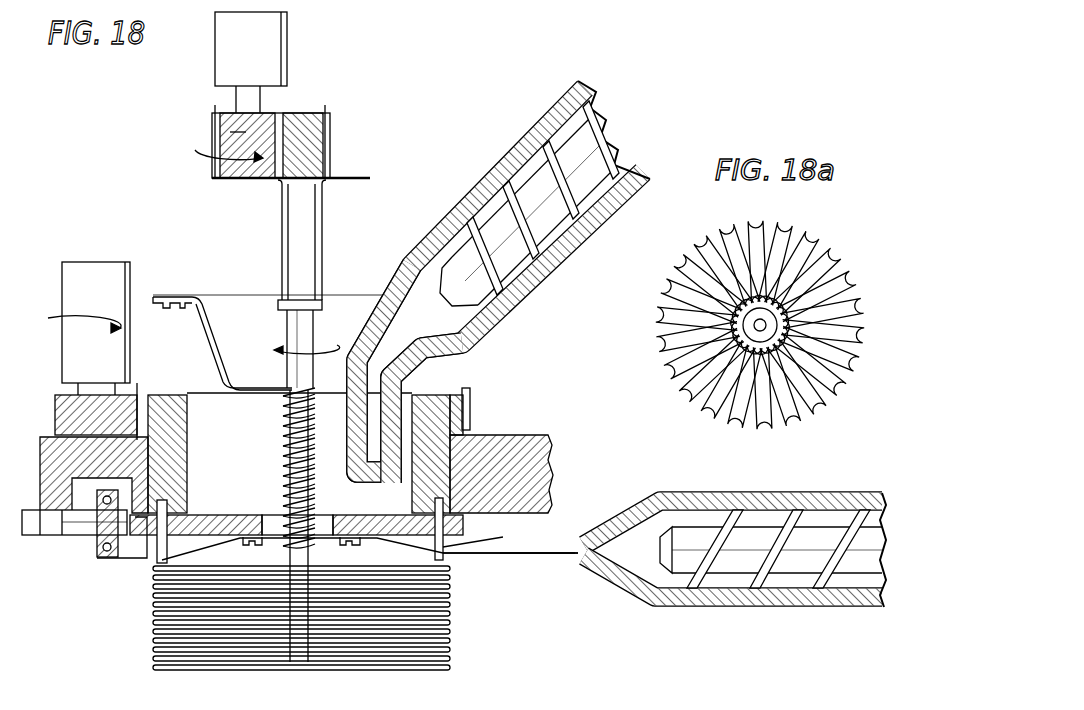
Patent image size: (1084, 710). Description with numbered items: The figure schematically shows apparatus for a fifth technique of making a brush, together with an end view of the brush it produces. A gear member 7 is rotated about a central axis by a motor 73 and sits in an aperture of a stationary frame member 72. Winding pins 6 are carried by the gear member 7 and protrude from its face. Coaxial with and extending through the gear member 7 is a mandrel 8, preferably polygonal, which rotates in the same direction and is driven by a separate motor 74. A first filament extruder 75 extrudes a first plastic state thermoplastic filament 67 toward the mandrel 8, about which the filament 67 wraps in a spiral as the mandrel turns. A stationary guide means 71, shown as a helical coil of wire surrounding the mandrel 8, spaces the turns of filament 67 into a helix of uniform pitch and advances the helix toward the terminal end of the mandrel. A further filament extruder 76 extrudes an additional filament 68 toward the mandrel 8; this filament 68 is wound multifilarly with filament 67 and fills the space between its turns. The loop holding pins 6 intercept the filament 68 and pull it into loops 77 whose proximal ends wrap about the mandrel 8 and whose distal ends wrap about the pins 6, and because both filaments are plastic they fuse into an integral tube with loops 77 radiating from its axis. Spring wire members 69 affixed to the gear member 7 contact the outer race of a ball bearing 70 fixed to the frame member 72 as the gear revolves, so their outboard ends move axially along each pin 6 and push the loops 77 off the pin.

In FIG. 18, the winding pins 6 is at (157, 560).
In FIG. 18, the gear member 7 is at (475, 535).
In FIG. 18, the mandrel 8 is at (305, 322).
In FIG. 18, the first plastic state thermoplastic filament 67 is at (318, 470).
In FIG. 18A, the first plastic state thermoplastic filament 67 is at (690, 317).
In FIG. 18, the additional plastic state thermoplastic filament 68 is at (582, 536).
In FIG. 18A, the additional plastic state thermoplastic filament 68 is at (700, 244).
In FIG. 18, the spring wire members 69 is at (135, 562).
In FIG. 18, the ball bearing 70 is at (97, 556).
In FIG. 18, the stationary guide means 71 is at (280, 424).
In FIG. 18, the stationary frame member 72 is at (512, 435).
In FIG. 18, the motor 73 is at (93, 268).
In FIG. 18, the motor 74 is at (290, 48).
In FIG. 18, the first filament extruder 75 is at (517, 150).
In FIG. 18, the filament extruder 76 is at (727, 493).
In FIG. 18, the loops 77 is at (455, 633).